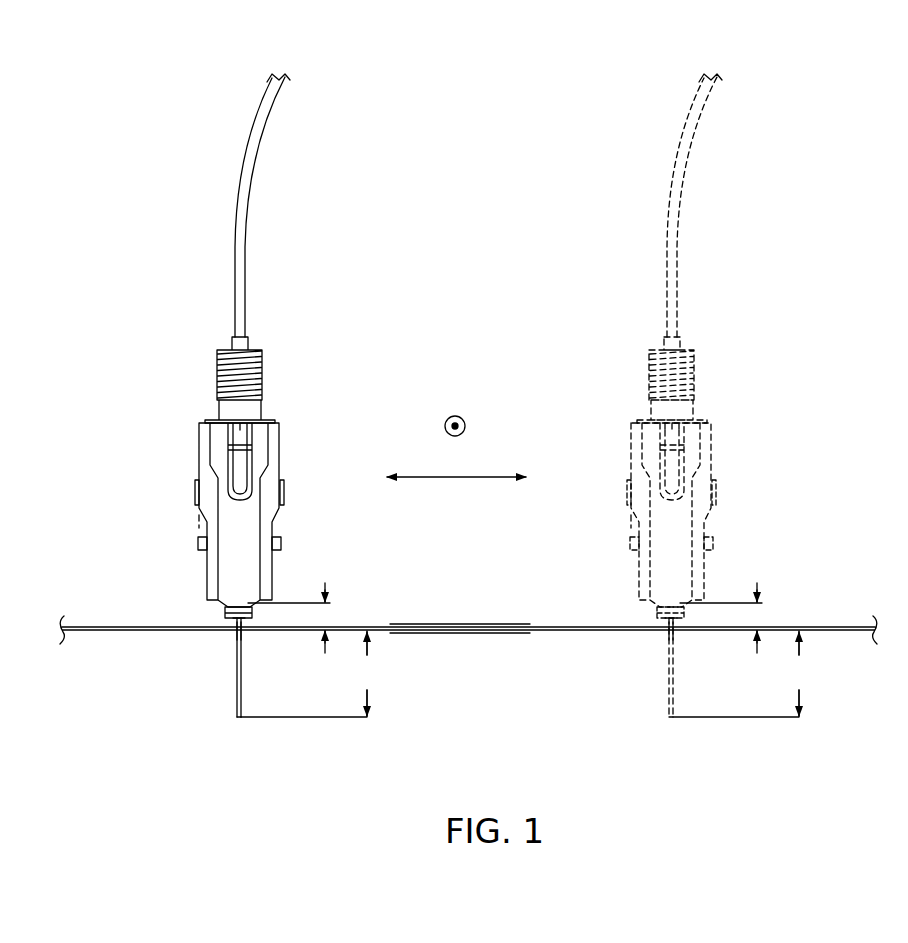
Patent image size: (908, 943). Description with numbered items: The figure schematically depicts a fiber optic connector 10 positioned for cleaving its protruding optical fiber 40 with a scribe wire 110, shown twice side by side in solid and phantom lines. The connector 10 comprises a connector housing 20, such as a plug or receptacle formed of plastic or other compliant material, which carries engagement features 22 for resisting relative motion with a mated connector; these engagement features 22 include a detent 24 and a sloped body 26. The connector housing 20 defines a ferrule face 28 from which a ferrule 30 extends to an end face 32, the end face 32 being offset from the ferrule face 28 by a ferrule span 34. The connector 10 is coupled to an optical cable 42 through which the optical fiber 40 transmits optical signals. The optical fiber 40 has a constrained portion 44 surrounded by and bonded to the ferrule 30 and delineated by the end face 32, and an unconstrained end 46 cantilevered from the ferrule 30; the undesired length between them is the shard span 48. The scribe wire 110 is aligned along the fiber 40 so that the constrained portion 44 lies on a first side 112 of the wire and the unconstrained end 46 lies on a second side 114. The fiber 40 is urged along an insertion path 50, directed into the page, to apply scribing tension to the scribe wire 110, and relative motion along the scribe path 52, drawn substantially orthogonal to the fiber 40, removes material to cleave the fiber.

The fiber optic connector 10 is at (185, 399).
The connector housing 20 is at (281, 448).
The engagement features 22 is at (183, 529).
The detent 24 is at (198, 543).
The sloped body 26 is at (199, 506).
The ferrule face 28 is at (278, 613).
The ferrule 30 is at (224, 606).
The end face 32 is at (245, 630).
The ferrule span 34 is at (327, 614).
The optical fiber 40 is at (236, 664).
The optical cable 42 is at (249, 200).
The constrained portion 44 is at (235, 623).
The unconstrained end 46 is at (235, 719).
The shard span 48 is at (527, 674).
The insertion path 50 is at (455, 416).
The scribe path 52 is at (459, 479).
The scribe wire 110 is at (462, 626).
The first side 112 is at (449, 608).
The second side 114 is at (461, 646).